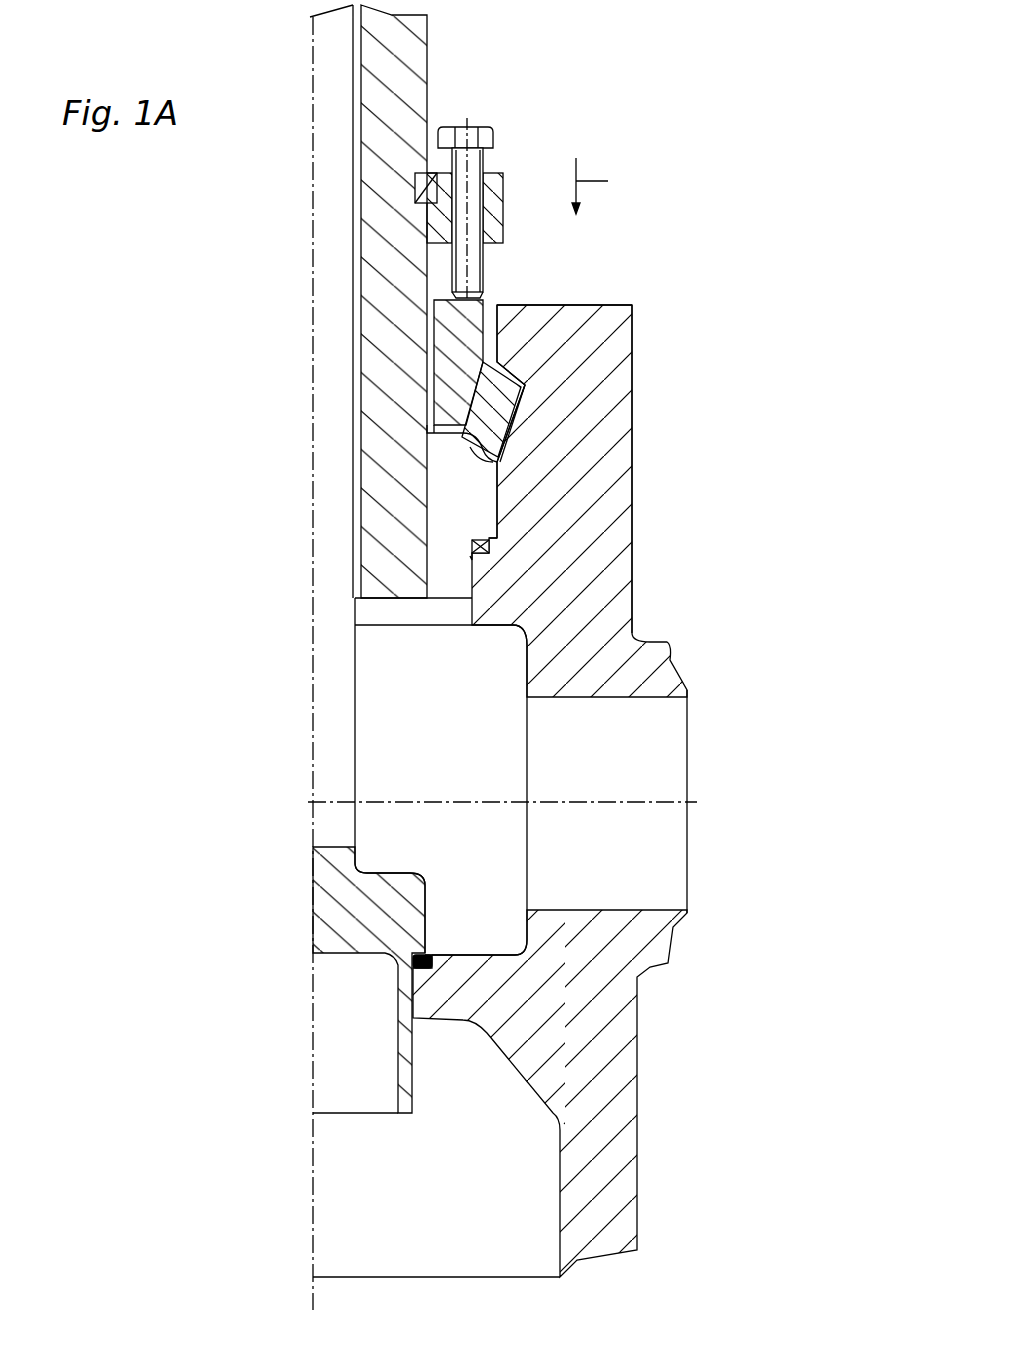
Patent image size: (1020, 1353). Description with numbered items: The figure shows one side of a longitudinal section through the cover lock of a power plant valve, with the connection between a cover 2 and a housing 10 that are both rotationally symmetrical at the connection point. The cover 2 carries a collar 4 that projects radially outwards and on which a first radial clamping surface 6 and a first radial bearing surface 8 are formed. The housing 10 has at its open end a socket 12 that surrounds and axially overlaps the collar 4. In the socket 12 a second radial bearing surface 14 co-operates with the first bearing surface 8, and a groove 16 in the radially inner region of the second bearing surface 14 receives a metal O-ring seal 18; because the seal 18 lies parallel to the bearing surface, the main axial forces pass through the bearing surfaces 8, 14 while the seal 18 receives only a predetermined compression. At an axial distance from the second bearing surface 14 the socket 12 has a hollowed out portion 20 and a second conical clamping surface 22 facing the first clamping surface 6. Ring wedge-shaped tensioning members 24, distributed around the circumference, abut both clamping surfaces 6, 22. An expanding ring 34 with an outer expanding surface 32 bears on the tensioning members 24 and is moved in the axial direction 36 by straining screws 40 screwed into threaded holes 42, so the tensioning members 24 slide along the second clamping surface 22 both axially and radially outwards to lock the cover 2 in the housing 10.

The cover 2 is at (410, 57).
The collar 4 is at (492, 477).
The first clamping surface 6 is at (493, 462).
The first bearing surface 8 is at (493, 510).
The second component 10 is at (600, 598).
The socket 12 is at (636, 377).
The second bearing surface 14 is at (495, 545).
The groove 16 is at (483, 557).
The metal O-ring seal 18 is at (477, 530).
The hollowed out portion 20 is at (535, 420).
The second conical clamping surface 22 is at (515, 396).
The tensioning members 24 is at (510, 402).
The outer expanding surface 32 is at (500, 400).
The expanding ring 34 is at (460, 335).
The axial direction 36 is at (605, 186).
The straining screws 40 is at (470, 165).
The threaded holes 42 is at (497, 233).